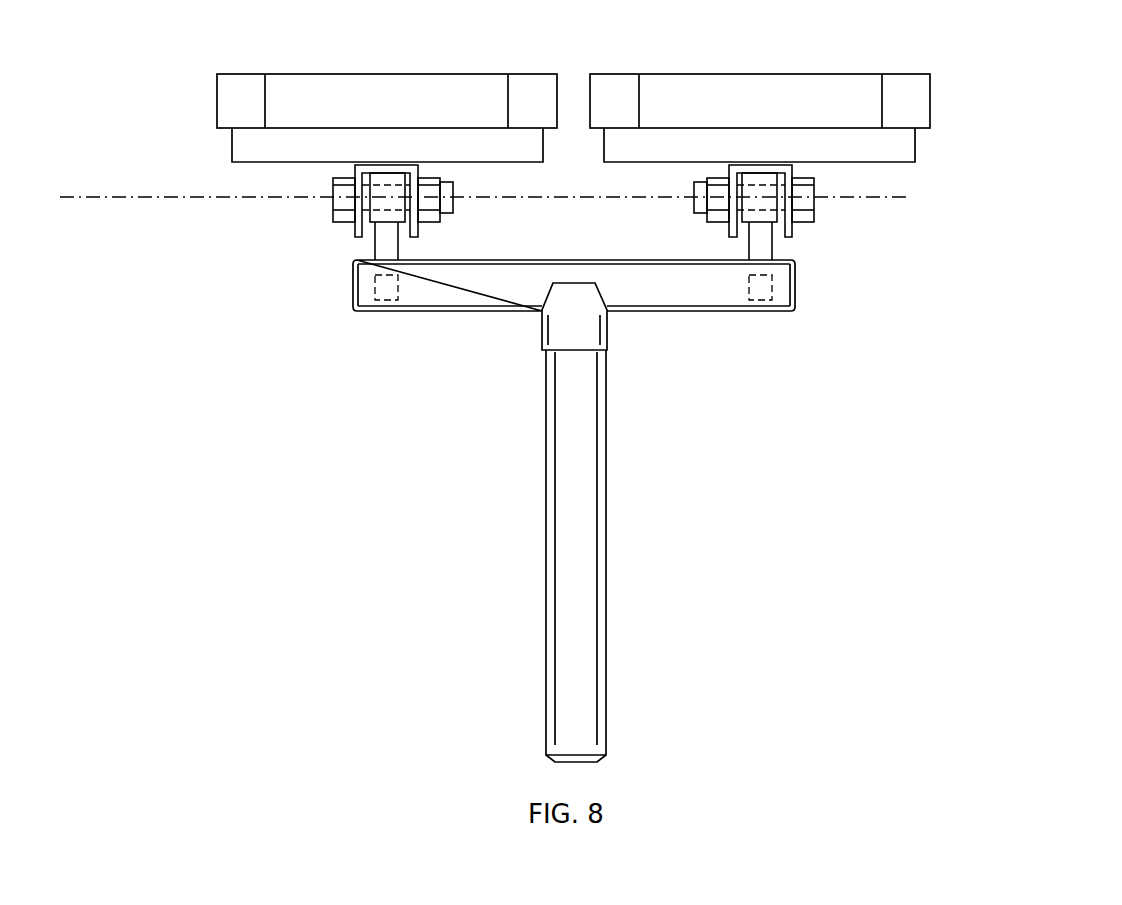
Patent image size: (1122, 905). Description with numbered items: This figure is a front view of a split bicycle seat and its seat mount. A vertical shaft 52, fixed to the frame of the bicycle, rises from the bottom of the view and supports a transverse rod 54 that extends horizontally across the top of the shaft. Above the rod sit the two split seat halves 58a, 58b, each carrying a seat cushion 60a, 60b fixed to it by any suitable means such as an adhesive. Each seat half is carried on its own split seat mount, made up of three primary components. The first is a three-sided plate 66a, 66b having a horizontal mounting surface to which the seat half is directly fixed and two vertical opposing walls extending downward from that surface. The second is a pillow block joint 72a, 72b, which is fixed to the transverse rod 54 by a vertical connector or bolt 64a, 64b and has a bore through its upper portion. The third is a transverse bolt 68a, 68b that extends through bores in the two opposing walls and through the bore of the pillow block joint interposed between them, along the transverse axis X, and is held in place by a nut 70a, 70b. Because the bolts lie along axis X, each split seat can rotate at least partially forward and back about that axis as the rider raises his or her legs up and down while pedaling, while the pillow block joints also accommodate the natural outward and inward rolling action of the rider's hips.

The vertical shaft 52 is at (557, 582).
The transverse rod 54 is at (795, 290).
The split seat half 58a is at (232, 135).
The split seat half 58b is at (900, 162).
The seat cushion 60a is at (217, 86).
The seat cushion 60b is at (930, 121).
The vertical connector 64a is at (385, 248).
The vertical connector 64b is at (765, 246).
The three-sided plate 66a is at (413, 237).
The three-sided plate 66b is at (735, 237).
The transverse bolt 68a is at (355, 222).
The transverse bolt 68b is at (813, 222).
The nut 70a is at (427, 217).
The nut 70b is at (722, 220).
The pillow block joint 72a is at (383, 180).
The pillow block joint 72b is at (765, 180).
The transverse axis X is at (128, 197).